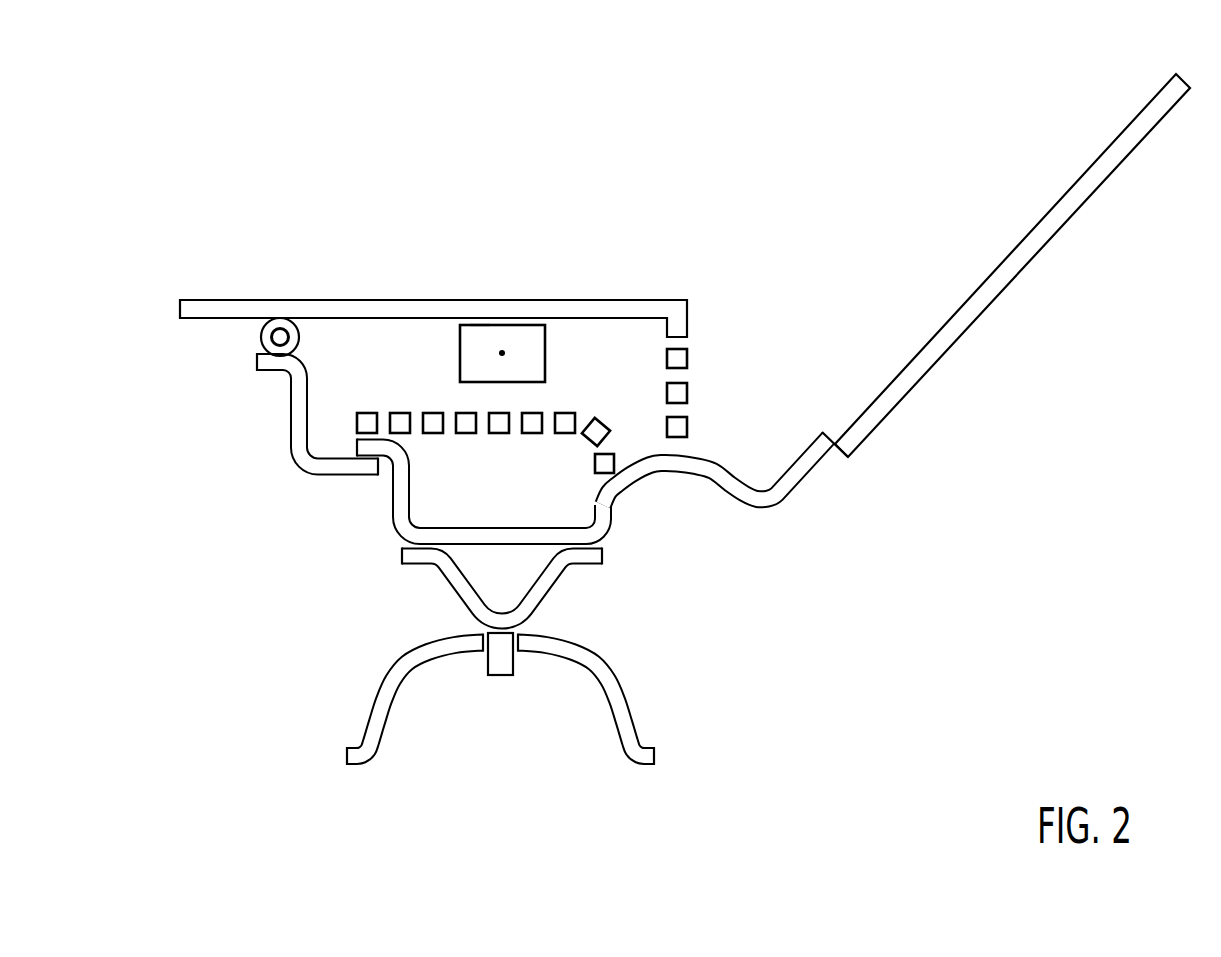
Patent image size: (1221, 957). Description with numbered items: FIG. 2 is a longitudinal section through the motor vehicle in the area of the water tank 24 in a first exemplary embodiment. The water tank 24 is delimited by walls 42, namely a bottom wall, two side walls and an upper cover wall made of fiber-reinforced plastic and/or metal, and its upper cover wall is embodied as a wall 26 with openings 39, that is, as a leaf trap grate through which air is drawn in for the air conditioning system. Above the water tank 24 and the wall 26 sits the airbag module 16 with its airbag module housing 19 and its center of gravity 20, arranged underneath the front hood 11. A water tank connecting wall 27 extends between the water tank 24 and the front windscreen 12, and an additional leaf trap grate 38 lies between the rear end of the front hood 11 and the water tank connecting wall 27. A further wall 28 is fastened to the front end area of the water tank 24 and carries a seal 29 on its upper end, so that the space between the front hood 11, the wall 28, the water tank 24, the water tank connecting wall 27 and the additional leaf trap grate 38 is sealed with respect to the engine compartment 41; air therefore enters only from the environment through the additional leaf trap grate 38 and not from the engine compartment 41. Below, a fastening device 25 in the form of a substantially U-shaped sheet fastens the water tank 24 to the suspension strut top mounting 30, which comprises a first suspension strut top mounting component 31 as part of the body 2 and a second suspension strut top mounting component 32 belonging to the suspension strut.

The body 2 is at (433, 289).
The front hood 11 is at (371, 305).
The front windscreen 12 is at (1012, 257).
The airbag module 16 is at (505, 335).
The airbag module housing 19 is at (480, 325).
The center of gravity 20 is at (503, 352).
The water tank 24 is at (397, 492).
The fastening device 25 is at (548, 592).
The wall 26 is at (400, 413).
The water tank connecting wall 27 is at (757, 500).
The further wall 28 is at (306, 432).
The seal 29 is at (267, 338).
The suspension strut top mounting 30 is at (509, 700).
The first suspension strut top mounting component 31 is at (422, 648).
The second suspension strut top mounting component 32 is at (500, 675).
The additional leaf trap grate 38 is at (688, 360).
The openings 39 is at (447, 427).
The engine compartment 41 is at (145, 632).
The walls 42 is at (487, 474).